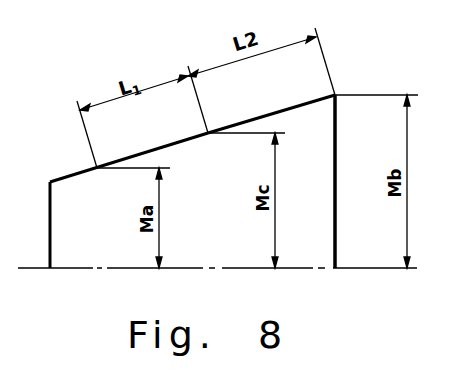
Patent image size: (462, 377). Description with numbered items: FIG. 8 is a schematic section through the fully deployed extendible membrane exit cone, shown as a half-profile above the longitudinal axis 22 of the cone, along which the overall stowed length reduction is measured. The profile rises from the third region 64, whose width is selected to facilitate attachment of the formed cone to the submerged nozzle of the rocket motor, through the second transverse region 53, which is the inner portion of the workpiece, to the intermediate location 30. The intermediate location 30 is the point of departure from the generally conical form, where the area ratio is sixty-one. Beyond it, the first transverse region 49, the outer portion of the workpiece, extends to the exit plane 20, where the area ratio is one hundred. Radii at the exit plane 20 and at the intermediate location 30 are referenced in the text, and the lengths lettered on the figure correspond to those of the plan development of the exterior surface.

The exit plane 20 is at (335, 95).
The longitudinal axis 22 is at (230, 268).
The intermediate location 30 is at (208, 133).
The first transverse region 49 is at (300, 106).
The second transverse region 53 is at (160, 148).
The third region 64 is at (57, 180).